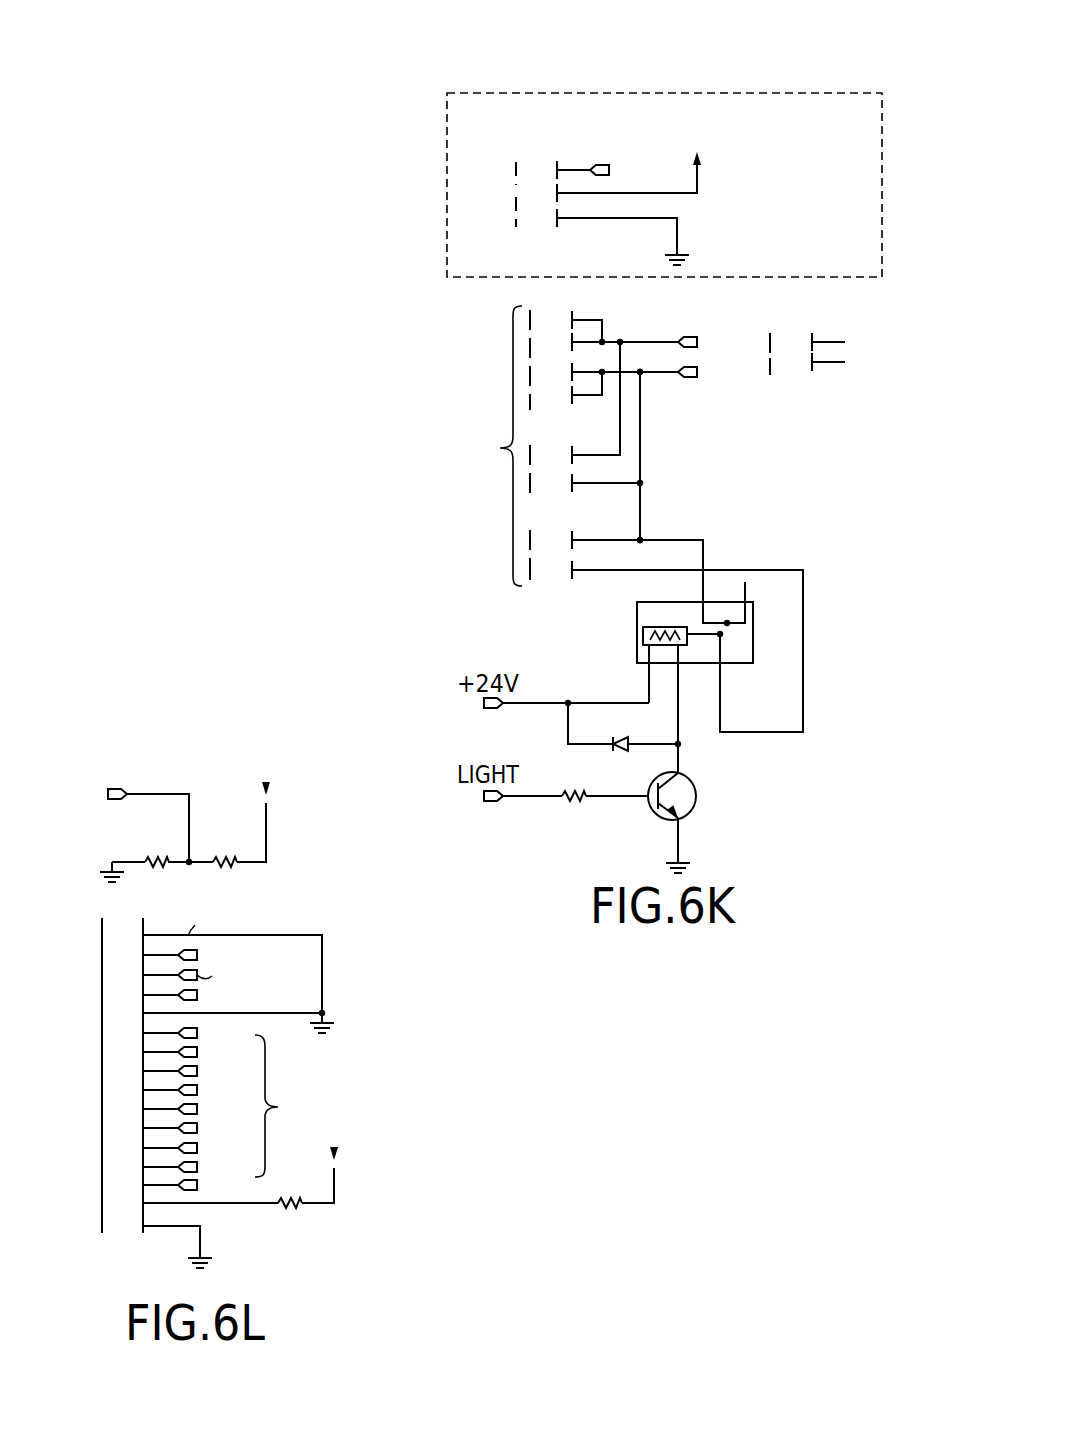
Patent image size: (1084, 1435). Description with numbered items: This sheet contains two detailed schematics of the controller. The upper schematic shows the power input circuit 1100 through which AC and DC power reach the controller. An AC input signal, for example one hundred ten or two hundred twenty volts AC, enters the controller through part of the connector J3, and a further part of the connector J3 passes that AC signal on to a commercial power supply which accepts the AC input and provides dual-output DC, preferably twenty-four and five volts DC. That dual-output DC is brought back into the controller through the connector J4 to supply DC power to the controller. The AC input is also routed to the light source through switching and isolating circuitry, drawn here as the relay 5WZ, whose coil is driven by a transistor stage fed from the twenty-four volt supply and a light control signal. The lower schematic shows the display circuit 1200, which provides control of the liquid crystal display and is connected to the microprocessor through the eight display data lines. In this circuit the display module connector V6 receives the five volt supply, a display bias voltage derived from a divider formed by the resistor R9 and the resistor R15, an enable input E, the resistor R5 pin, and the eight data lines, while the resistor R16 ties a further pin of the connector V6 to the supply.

In FIG. 6K, the power input circuit 1100 is at (642, 139).
In FIG. 6L, the display circuit 1200 is at (213, 992).
In FIG. 6K, the connector J4 is at (497, 186).
In FIG. 6K, the connector J3 is at (500, 346).
In FIG. 6K, the relay 5WZ is at (632, 620).
In FIG. 6L, the display module connector V6 is at (213, 1093).
In FIG. 6L, the resistor R9 is at (157, 878).
In FIG. 6L, the resistor R15 is at (225, 849).
In FIG. 6L, the resistor pin R5 is at (197, 995).
In FIG. 6L, the resistor R16 is at (291, 1220).
In FIG. 6L, the enable pin E is at (197, 1033).